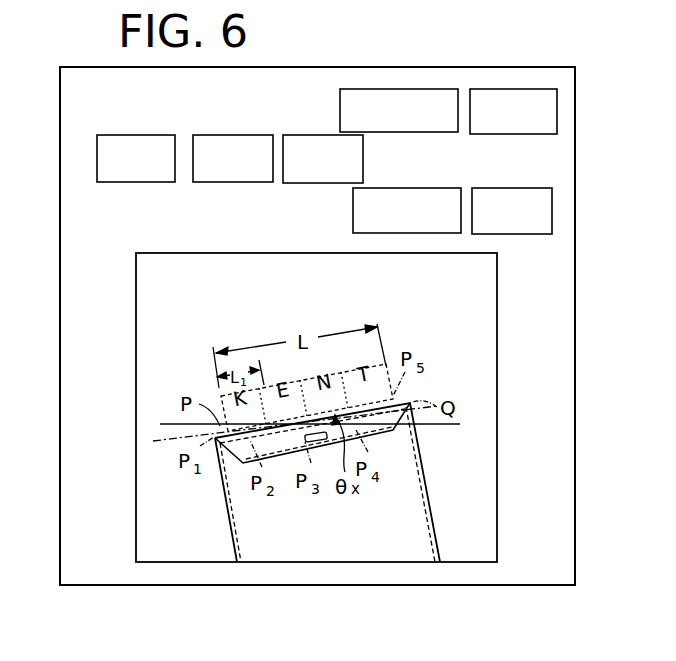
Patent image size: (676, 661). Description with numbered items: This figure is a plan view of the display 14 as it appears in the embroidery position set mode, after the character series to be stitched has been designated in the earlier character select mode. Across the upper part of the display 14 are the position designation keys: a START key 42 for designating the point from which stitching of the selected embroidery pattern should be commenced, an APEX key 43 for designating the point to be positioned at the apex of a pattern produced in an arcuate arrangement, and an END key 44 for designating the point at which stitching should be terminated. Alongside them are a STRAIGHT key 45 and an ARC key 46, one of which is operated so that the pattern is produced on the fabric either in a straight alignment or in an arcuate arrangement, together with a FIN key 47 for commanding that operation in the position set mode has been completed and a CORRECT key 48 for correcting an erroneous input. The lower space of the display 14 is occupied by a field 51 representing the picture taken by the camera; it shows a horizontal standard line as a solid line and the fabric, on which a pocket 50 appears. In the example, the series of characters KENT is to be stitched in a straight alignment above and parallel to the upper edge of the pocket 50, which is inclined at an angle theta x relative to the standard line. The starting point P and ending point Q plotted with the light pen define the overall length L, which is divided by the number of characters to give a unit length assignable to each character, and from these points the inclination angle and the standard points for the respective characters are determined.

The display 14 is at (575, 275).
The START key 42 is at (145, 134).
The APEX key 43 is at (233, 183).
The END key 44 is at (313, 184).
The STRAIGHT key 45 is at (420, 88).
The ARC key 46 is at (527, 88).
The FIN key 47 is at (512, 187).
The CORRECT key 48 is at (422, 187).
The pocket 50 is at (413, 497).
The field 51 is at (497, 395).